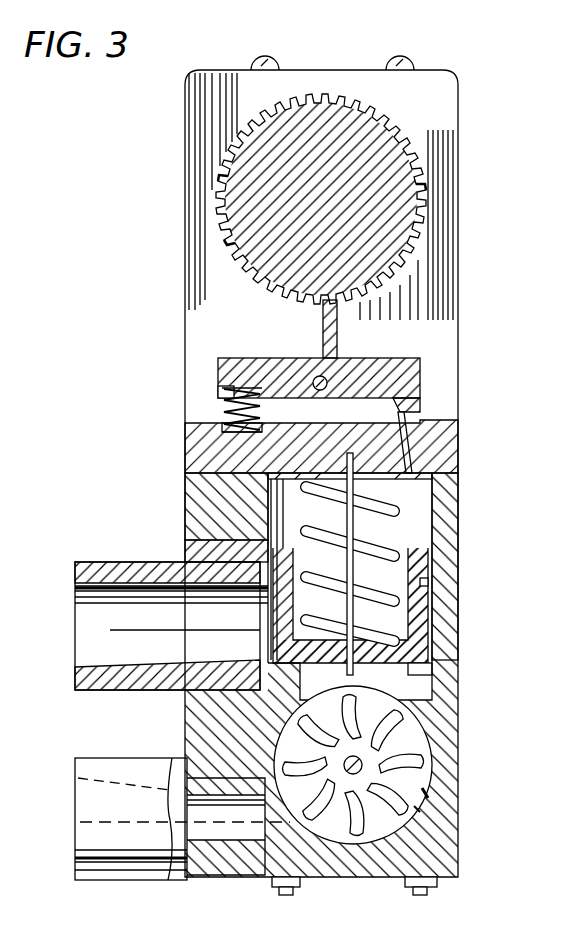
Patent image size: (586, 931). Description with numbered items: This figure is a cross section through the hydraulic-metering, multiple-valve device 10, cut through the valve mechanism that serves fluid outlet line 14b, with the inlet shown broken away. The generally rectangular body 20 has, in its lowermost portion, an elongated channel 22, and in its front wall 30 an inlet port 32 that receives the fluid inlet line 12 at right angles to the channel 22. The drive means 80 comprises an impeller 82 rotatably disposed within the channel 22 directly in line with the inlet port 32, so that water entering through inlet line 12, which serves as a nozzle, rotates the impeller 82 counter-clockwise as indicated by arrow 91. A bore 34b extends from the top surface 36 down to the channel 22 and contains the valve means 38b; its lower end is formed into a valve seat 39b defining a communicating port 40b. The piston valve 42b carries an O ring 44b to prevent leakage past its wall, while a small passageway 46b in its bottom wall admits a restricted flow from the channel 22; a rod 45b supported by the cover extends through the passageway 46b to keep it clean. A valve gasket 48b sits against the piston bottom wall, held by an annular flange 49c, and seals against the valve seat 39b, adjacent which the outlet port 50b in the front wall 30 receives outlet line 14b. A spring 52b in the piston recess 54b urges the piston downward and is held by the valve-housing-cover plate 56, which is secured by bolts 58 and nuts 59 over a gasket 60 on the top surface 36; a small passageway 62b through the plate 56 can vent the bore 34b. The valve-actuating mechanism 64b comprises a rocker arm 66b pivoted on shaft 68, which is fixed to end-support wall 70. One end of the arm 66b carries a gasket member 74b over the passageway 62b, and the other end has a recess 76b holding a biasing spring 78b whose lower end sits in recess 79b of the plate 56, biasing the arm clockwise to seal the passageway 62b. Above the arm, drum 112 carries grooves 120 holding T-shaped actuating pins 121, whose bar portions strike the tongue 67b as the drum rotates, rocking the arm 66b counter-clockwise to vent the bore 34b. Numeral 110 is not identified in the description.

The hydraulic-metering, multiple-valve device 10 is at (98, 356).
The fluid inlet line 12 is at (97, 776).
The fluid outlet line 14b is at (95, 562).
The body 20 is at (455, 701).
The channel 22 is at (440, 748).
The front wall 30 is at (185, 706).
The inlet port 32 is at (270, 826).
The bore 34b is at (420, 516).
The top surface 36 is at (215, 478).
The valve means 38b is at (432, 555).
The valve seat 39b is at (458, 641).
The communicating port 40b is at (462, 686).
The piston valve 42b is at (420, 593).
The O ring 44b is at (426, 579).
The rod 45b is at (345, 521).
The passageway 46b is at (358, 609).
The valve gasket 48b is at (415, 636).
The annular flange 49c is at (266, 647).
The outlet port 50b is at (256, 592).
The spring 52b is at (440, 478).
The piston recess 54b is at (192, 545).
The valve-housing-cover plate 56 is at (445, 428).
The bolts 58 is at (398, 60).
The nuts 59 is at (406, 886).
The gasket 60 is at (205, 445).
The passageway 62b is at (415, 450).
The valve-actuating mechanism 64b is at (240, 356).
The rocker arm 66b is at (386, 358).
The tongue 67b is at (338, 330).
The shaft 68 is at (317, 378).
The end-support wall 70 is at (445, 111).
The gasket member 74b is at (410, 398).
The recess 76b is at (226, 373).
The biasing spring 78b is at (228, 410).
The recess 79b is at (240, 421).
The drive means 80 is at (430, 775).
The impeller 82 is at (428, 794).
The arrow 91 is at (418, 806).
The gear tooth 110 is at (424, 190).
The drum 112 is at (245, 196).
The grooves 120 is at (402, 141).
The actuating pins 121 is at (226, 134).